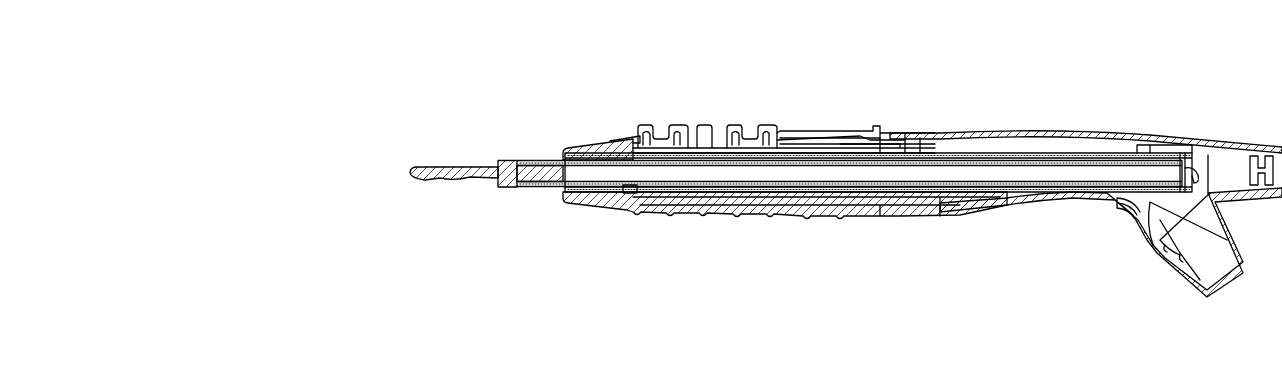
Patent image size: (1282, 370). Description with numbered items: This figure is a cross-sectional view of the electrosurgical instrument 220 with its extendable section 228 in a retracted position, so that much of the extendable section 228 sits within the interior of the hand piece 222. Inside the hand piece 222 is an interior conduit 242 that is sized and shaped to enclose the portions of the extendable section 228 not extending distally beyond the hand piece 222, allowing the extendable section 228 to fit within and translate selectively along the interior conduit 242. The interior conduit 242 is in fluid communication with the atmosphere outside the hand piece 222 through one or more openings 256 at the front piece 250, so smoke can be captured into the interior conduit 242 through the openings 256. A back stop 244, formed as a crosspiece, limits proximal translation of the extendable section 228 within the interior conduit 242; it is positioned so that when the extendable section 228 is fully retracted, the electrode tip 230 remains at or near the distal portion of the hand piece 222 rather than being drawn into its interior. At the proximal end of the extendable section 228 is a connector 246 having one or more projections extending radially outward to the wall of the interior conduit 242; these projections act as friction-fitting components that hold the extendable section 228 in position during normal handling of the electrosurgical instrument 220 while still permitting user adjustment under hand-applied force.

The electrosurgical instrument 220 is at (650, 70).
The hand piece 222 is at (938, 135).
The extendable section 228 is at (506, 188).
The electrode tip 230 is at (433, 166).
The interior conduit 242 is at (1035, 157).
The back stop 244 is at (1202, 180).
The connector 246 is at (1163, 172).
The front piece 250 is at (577, 150).
The openings 256 is at (562, 190).